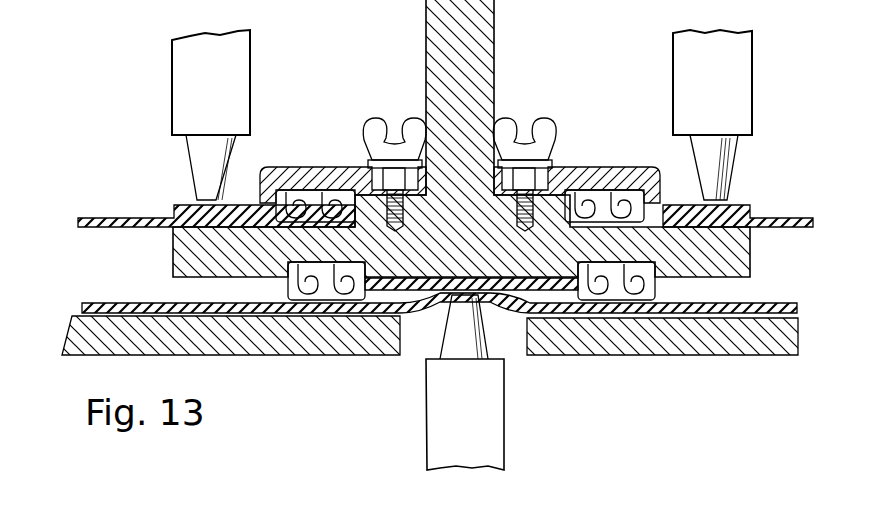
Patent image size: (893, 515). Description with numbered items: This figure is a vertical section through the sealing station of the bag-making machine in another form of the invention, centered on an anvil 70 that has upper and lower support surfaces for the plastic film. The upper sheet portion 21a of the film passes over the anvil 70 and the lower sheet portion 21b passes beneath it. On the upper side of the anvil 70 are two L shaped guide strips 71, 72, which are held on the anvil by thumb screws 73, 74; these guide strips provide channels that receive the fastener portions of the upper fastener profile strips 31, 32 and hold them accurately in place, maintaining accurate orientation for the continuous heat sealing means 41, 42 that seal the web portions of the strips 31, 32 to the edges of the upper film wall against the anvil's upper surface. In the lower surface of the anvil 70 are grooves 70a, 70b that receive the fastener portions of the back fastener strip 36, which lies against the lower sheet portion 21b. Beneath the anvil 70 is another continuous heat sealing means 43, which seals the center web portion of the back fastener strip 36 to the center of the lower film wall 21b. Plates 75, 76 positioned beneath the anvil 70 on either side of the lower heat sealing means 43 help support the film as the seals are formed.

The continuous heat sealing means 41 is at (235, 56).
The continuous heat sealing means 42 is at (744, 55).
The continuous heat sealing means 43 is at (495, 438).
The upper sheet portion of the film 21a is at (120, 214).
The lower sheet portion of the film 21b is at (110, 303).
The upper fastener profile strip 31 is at (313, 188).
The upper fastener profile strip 32 is at (594, 188).
The back fastener strip 36 is at (441, 296).
The anvil 70 is at (432, 236).
The groove 70a is at (296, 277).
The groove 70b is at (649, 278).
The L shaped guide strip 71 is at (277, 168).
The L shaped guide strip 72 is at (643, 168).
The thumb screw 73 is at (374, 126).
The thumb screw 74 is at (545, 124).
The plate 75 is at (312, 353).
The plate 76 is at (646, 354).